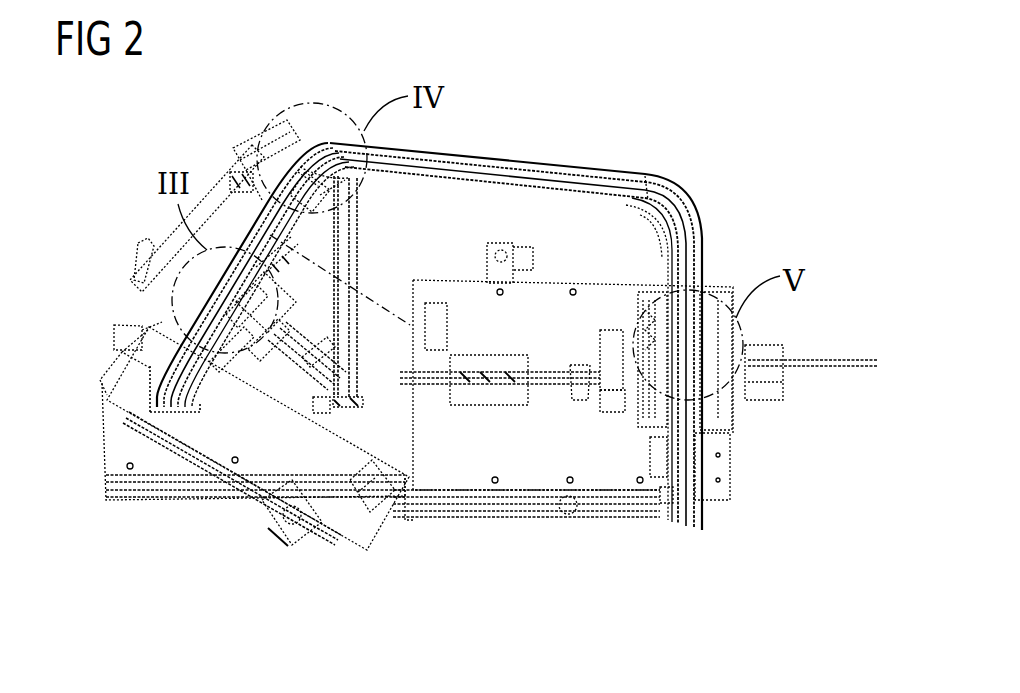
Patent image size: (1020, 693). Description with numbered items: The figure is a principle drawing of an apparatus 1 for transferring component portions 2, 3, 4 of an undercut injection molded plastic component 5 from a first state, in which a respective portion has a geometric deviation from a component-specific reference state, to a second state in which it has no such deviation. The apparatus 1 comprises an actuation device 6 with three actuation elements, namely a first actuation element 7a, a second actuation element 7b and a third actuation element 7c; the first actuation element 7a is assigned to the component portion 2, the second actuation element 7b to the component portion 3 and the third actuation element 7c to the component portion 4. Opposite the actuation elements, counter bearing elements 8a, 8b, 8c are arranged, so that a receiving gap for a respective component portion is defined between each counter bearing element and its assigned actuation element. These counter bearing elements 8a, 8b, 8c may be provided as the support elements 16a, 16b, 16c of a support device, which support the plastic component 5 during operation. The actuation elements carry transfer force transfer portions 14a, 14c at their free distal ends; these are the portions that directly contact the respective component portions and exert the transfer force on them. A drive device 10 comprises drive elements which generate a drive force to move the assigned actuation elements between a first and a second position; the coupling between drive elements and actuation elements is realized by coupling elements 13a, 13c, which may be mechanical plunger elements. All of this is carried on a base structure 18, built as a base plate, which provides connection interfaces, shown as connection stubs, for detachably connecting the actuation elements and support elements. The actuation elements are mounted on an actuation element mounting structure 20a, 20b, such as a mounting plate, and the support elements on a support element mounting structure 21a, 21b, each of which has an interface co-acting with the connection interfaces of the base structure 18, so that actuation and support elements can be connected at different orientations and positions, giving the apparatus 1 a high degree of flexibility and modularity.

The apparatus 1 is at (756, 529).
The component portion 2 is at (138, 375).
The component portion 3 is at (300, 163).
The component portion 4 is at (677, 362).
The undercut injection molded plastic component 5 is at (583, 148).
The actuation device 6 is at (462, 462).
The first actuation element 7a is at (223, 380).
The second actuation element 7b is at (242, 130).
The third actuation element 7c is at (618, 428).
The counter bearing element 8a is at (142, 247).
The counter bearing element 8b is at (347, 124).
The counter bearing element 8c is at (744, 351).
The drive device 10 is at (420, 527).
The coupling element 13a is at (293, 397).
The coupling element 13c is at (543, 367).
The transfer force transfer portion 14a is at (276, 268).
The transfer force transfer portion 14c is at (641, 296).
The support element 16a is at (155, 326).
The support element 16b is at (315, 166).
The support element 16c is at (722, 283).
The base structure 18 is at (145, 487).
The actuation element mounting structure 20a is at (258, 461).
The actuation element mounting structure 20b is at (526, 505).
The support element mounting structure 21a is at (323, 503).
The support element mounting structure 21b is at (533, 447).